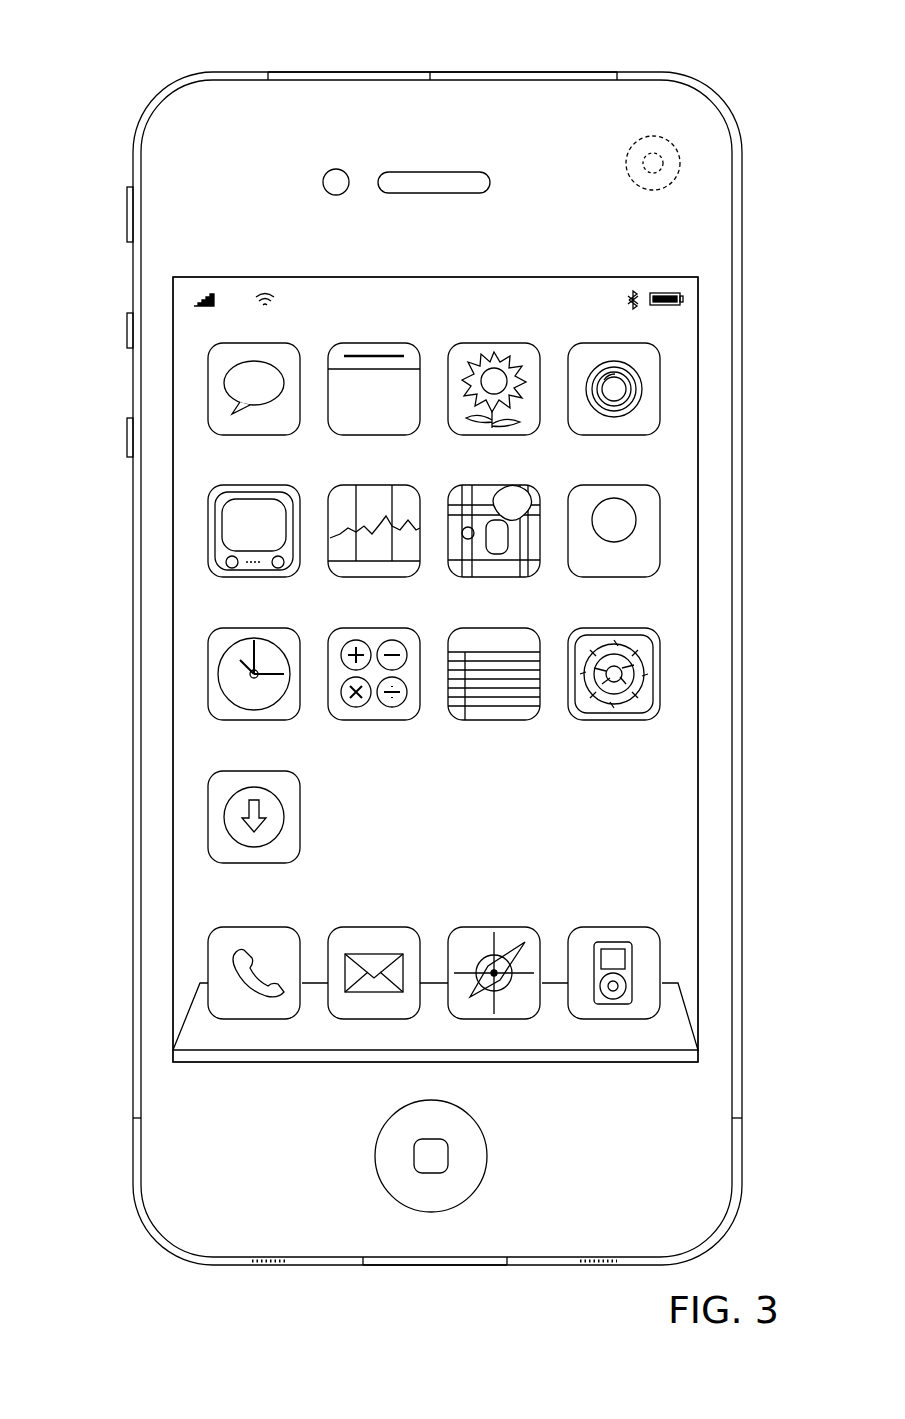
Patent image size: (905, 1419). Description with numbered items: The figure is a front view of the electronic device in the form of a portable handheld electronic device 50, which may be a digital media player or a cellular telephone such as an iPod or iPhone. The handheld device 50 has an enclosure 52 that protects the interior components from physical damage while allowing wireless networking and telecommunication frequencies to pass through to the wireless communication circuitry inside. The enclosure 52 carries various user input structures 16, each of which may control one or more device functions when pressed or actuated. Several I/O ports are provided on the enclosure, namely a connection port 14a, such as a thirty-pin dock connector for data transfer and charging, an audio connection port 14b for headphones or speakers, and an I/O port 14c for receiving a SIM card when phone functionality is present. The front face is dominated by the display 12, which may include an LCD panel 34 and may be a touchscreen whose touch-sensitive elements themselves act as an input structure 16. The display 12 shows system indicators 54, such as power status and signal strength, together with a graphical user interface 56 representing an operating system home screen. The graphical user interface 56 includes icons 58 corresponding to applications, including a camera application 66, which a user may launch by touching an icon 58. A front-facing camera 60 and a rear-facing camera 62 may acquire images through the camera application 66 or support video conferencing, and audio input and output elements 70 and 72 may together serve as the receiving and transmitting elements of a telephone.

The display 12 is at (700, 637).
The connection port 14a is at (415, 1267).
The audio connection port 14b is at (270, 74).
The I/O port 14c is at (432, 74).
The user input structures 16 is at (126, 221).
The LCD panel 34 is at (683, 800).
The portable handheld electronic device 50 is at (228, 30).
The enclosure 52 is at (745, 270).
The system indicators 54 is at (212, 296).
The graphical user interface 56 is at (484, 651).
The icons 58 is at (434, 684).
The front-facing camera 60 is at (342, 170).
The rear-facing camera 62 is at (663, 142).
The camera application 66 is at (612, 344).
The audio input and output elements 70 is at (265, 1267).
The audio input and output elements 72 is at (448, 171).